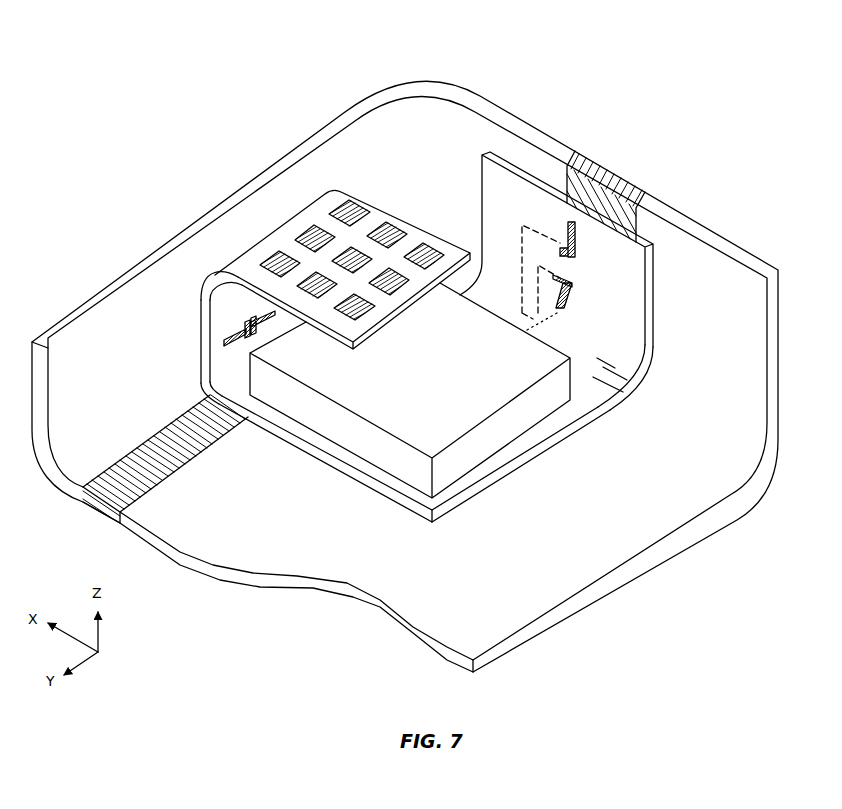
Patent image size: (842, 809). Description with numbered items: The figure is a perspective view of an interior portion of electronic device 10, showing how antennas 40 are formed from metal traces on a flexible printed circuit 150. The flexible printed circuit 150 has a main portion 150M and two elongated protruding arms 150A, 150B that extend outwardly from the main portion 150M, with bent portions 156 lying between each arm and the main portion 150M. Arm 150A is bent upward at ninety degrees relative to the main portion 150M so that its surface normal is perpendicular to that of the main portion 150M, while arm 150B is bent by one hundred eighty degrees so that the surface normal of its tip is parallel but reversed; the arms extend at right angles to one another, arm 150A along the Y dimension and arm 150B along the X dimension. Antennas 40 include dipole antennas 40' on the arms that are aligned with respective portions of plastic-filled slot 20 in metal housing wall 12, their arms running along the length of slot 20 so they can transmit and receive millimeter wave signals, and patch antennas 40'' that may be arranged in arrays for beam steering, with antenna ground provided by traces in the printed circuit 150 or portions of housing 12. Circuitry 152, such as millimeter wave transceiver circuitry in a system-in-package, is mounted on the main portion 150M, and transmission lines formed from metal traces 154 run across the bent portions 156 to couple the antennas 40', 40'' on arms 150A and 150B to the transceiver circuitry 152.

The electronic device 10 is at (580, 46).
The metal housing wall 12 is at (509, 118).
The plastic-filled slot 20 is at (171, 466).
The antennas 40 is at (366, 261).
The dipole antennas 40' is at (461, 367).
The patch antennas 40'' is at (351, 228).
The flexible printed circuit 150 is at (322, 484).
The arm 150A is at (632, 292).
The arm 150B is at (250, 292).
The main portion 150M is at (384, 478).
The circuitry 152 is at (503, 428).
The metal traces 154 is at (528, 315).
The bent portions 156 is at (230, 290).